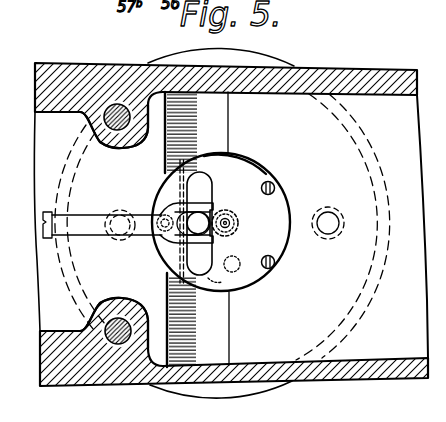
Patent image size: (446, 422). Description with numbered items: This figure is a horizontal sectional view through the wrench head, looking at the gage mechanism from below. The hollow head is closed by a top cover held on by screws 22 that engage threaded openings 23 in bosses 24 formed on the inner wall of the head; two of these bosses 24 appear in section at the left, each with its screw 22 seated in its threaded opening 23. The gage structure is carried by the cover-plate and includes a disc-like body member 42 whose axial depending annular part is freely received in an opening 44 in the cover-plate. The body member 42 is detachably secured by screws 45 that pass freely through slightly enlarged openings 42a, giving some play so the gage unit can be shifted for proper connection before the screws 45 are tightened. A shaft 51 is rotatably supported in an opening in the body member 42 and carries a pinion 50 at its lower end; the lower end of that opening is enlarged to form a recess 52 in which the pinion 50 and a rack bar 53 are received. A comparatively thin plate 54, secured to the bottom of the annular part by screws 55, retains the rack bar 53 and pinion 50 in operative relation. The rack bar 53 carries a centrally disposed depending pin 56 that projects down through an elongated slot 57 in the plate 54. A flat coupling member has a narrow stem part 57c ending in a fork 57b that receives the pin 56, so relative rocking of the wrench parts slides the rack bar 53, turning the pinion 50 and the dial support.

The screws 22 is at (120, 104).
The threaded openings 23 is at (83, 131).
The bosses 24 is at (112, 140).
The disc-like body member 42 is at (231, 224).
The enlarged openings 42a is at (330, 207).
The opening 44 is at (270, 272).
The screws 45 is at (118, 210).
The pinion 50 is at (239, 223).
The shaft 51 is at (233, 232).
The recess 52 is at (214, 282).
The rack bar 53 is at (224, 266).
The plate 54 is at (252, 162).
The screws 55 is at (273, 184).
The pin 56 is at (185, 212).
The elongated slot 57 is at (204, 185).
The fork 57b is at (178, 250).
The stem part 57c is at (42, 214).